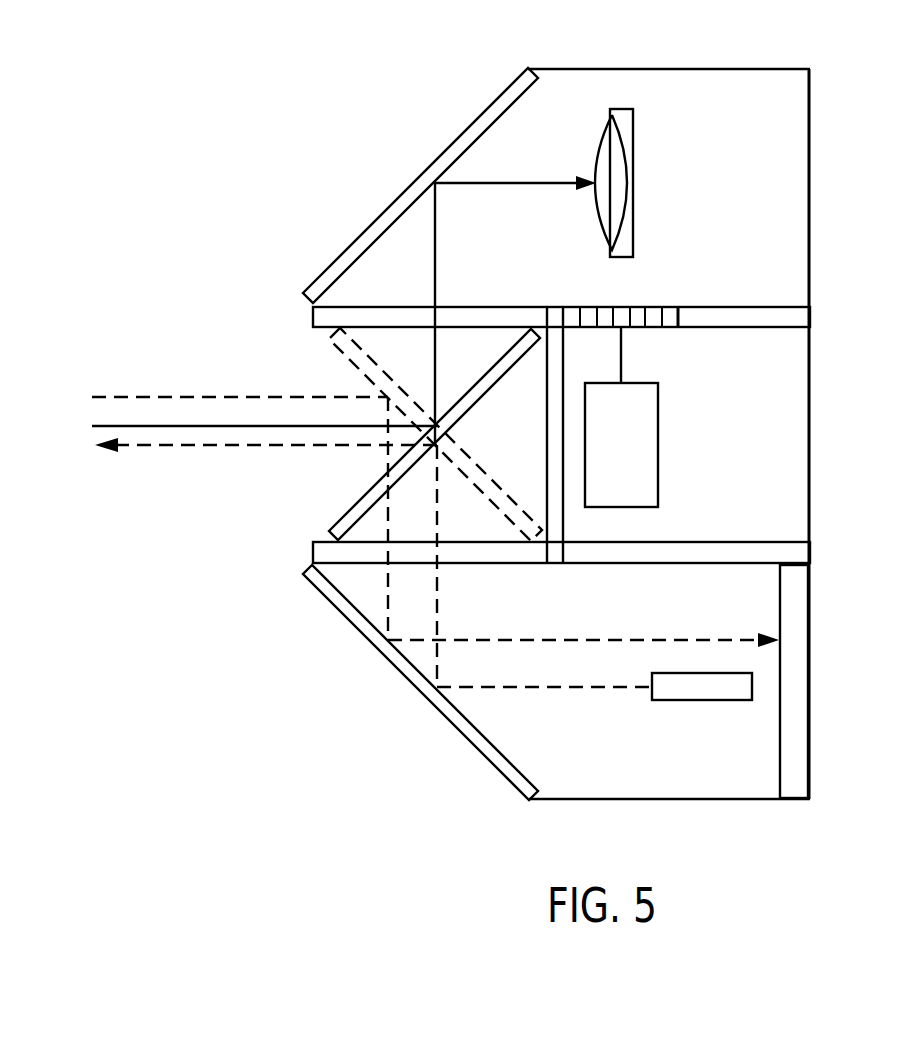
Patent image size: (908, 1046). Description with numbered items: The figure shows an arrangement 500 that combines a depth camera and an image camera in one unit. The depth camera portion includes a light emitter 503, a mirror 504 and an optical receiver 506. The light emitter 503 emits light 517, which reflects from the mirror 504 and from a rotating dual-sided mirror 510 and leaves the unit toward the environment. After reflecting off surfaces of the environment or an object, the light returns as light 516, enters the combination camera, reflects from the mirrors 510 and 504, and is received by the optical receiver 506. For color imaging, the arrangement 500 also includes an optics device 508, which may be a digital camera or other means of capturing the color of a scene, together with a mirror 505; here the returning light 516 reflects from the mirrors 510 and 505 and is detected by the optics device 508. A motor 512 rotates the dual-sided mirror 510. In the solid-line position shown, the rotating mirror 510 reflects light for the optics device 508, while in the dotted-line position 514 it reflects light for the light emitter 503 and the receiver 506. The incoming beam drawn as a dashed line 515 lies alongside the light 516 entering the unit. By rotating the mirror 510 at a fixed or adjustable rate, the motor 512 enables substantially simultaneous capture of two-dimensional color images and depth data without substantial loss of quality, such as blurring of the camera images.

The arrangement 500 is at (272, 75).
The light emitter 503 is at (705, 673).
The mirror 504 is at (402, 672).
The mirror 505 is at (433, 160).
The optical receiver 506 is at (810, 672).
The optics device 508 is at (632, 177).
The rotating dual-sided mirror 510 is at (352, 503).
The motor 512 is at (658, 430).
The position 514 is at (363, 372).
The incoming beam 515 is at (253, 400).
The light 516 is at (142, 425).
The light 517 is at (180, 445).